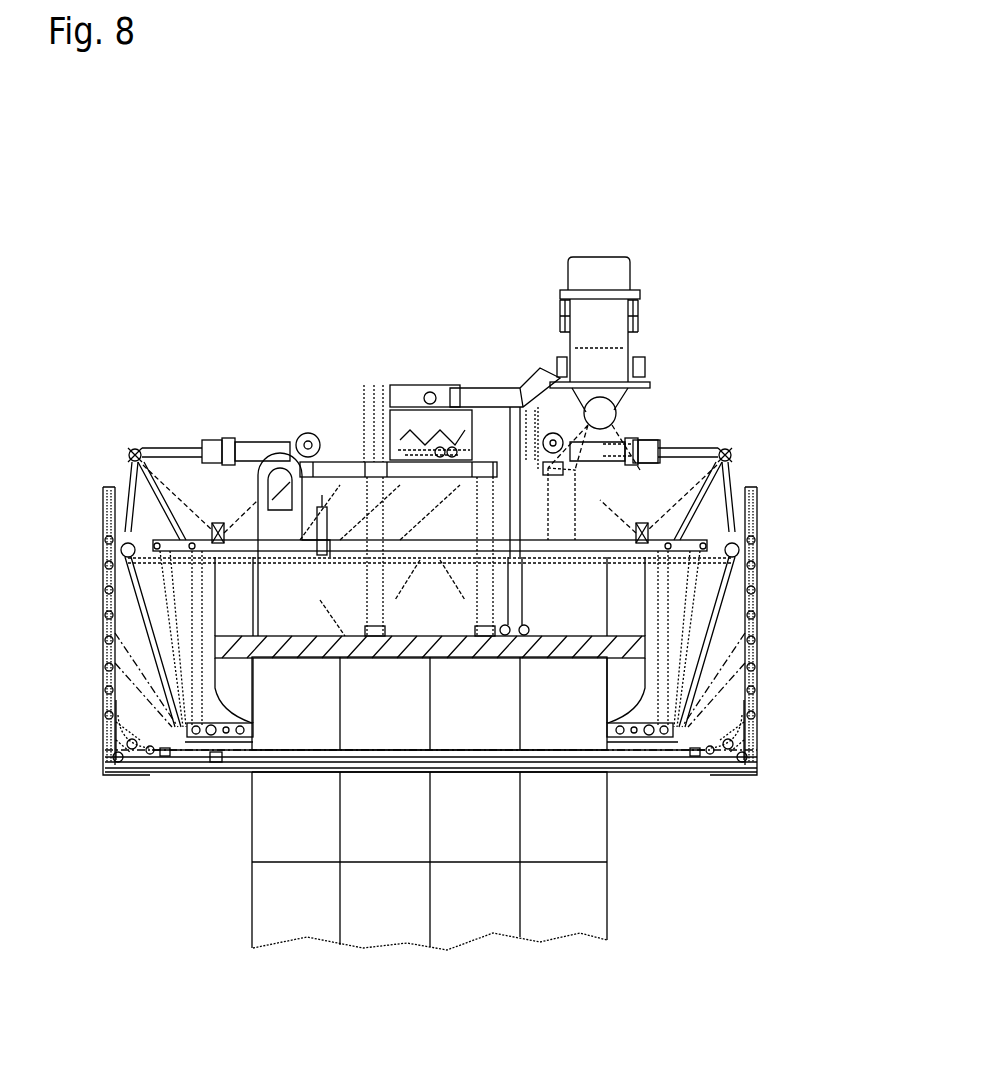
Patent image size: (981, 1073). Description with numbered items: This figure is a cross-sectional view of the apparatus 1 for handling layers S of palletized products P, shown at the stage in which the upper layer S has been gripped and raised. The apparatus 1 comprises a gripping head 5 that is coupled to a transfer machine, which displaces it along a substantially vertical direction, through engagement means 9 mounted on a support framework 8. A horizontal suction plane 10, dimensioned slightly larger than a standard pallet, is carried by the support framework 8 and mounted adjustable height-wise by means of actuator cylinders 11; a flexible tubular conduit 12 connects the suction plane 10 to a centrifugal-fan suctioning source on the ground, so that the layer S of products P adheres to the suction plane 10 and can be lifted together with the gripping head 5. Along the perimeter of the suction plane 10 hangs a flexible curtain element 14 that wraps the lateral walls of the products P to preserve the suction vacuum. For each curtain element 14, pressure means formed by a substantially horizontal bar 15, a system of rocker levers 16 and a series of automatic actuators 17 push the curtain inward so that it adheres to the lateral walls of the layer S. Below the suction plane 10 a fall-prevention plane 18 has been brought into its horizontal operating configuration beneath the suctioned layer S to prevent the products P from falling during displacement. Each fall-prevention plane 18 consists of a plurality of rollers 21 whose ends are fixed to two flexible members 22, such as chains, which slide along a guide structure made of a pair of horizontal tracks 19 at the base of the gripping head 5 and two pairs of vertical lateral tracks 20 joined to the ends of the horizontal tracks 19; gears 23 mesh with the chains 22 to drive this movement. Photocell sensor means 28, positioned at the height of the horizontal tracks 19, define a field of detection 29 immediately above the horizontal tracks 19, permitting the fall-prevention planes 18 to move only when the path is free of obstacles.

The apparatus 1 is at (252, 268).
The gripping head 5 is at (527, 342).
The support framework 8 is at (658, 442).
The engagement means 9 is at (442, 388).
The horizontal suction plane 10 is at (568, 645).
The actuator cylinders 11 is at (478, 490).
The flexible tubular conduit 12 is at (604, 270).
The flexible curtain element 14 is at (218, 613).
The horizontal bar 15 is at (240, 762).
The rocker levers 16 is at (120, 470).
The automatic actuators 17 is at (253, 440).
The fall-prevention plane 18 is at (83, 703).
The horizontal tracks 19 is at (665, 775).
The vertical lateral tracks 20 is at (103, 497).
The rollers 21 is at (102, 627).
The flexible members 22 is at (102, 518).
The gears 23 is at (130, 760).
The sensor means 28 is at (145, 772).
The field of detection 29 is at (205, 772).
The palletized products P is at (393, 828).
The layer S is at (640, 903).